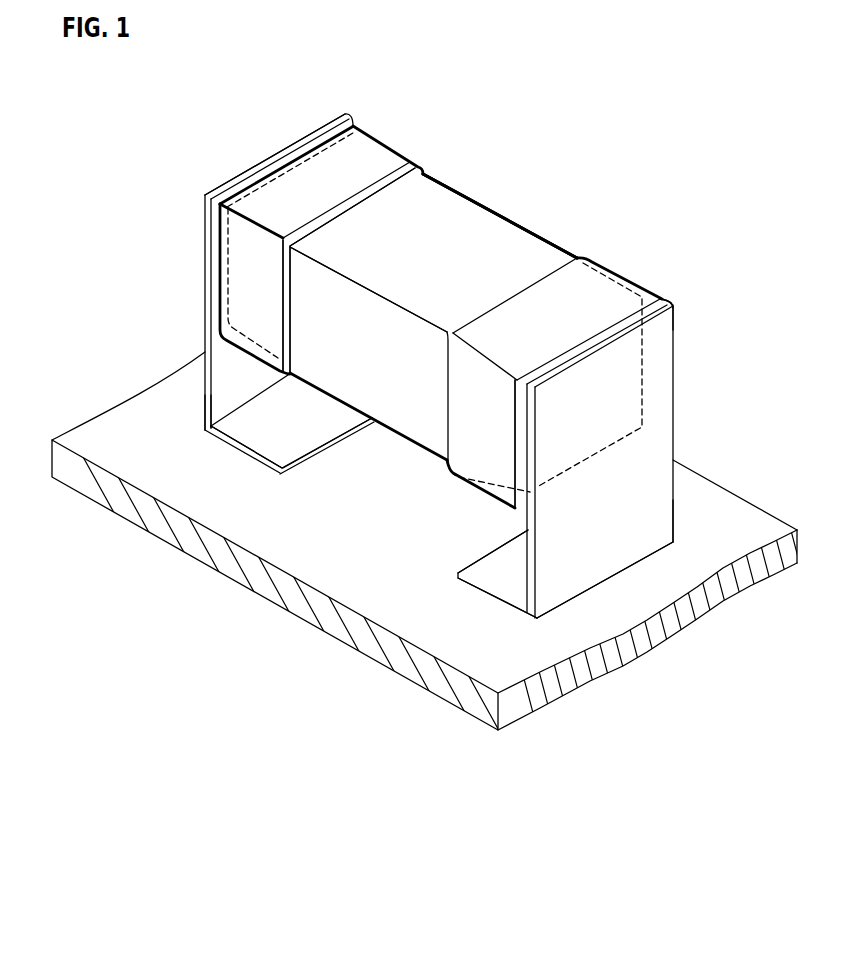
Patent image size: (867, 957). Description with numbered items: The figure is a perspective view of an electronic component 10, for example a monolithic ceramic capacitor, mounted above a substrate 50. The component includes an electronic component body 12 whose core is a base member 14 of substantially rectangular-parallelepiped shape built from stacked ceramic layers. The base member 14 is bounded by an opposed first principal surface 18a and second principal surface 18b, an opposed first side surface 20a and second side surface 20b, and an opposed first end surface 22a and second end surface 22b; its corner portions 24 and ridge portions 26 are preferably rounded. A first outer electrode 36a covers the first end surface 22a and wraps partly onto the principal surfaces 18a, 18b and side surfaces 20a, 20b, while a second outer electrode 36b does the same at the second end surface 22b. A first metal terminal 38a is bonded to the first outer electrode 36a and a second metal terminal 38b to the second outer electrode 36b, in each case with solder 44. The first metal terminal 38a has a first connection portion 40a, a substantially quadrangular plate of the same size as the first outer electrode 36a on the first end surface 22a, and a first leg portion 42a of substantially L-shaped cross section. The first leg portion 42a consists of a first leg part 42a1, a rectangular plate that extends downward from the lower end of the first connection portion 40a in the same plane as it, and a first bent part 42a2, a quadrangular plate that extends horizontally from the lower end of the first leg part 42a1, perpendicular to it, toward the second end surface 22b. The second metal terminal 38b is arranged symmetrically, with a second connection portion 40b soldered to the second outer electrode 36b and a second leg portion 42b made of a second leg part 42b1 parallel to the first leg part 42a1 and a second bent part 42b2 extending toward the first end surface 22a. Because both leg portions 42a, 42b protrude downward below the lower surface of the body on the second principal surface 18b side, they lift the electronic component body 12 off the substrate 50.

The electronic component 10 is at (372, 119).
The electronic component body 12 is at (440, 183).
The base member 14 is at (447, 202).
The first principal surface 18a is at (458, 217).
The second principal surface 18b is at (414, 425).
The first side surface 20a is at (388, 385).
The second side surface 20b is at (515, 213).
The first end surface 22a is at (292, 166).
The second end surface 22b is at (663, 314).
The corner portions 24 is at (353, 113).
The ridge portions 26 is at (353, 280).
The first outer electrode 36a is at (383, 137).
The second outer electrode 36b is at (615, 267).
The first metal terminal 38a is at (242, 172).
The second metal terminal 38b is at (663, 363).
The first connection portion 40a is at (208, 263).
The second connection portion 40b is at (650, 388).
The first leg portion 42a is at (78, 540).
The first leg part 42a1 is at (203, 378).
The first bent part 42a2 is at (276, 429).
The second leg portion 42b is at (605, 786).
The second leg part 42b1 is at (600, 537).
The second bent part 42b2 is at (505, 570).
The solder 44 is at (221, 213).
The substrate 50 is at (86, 438).